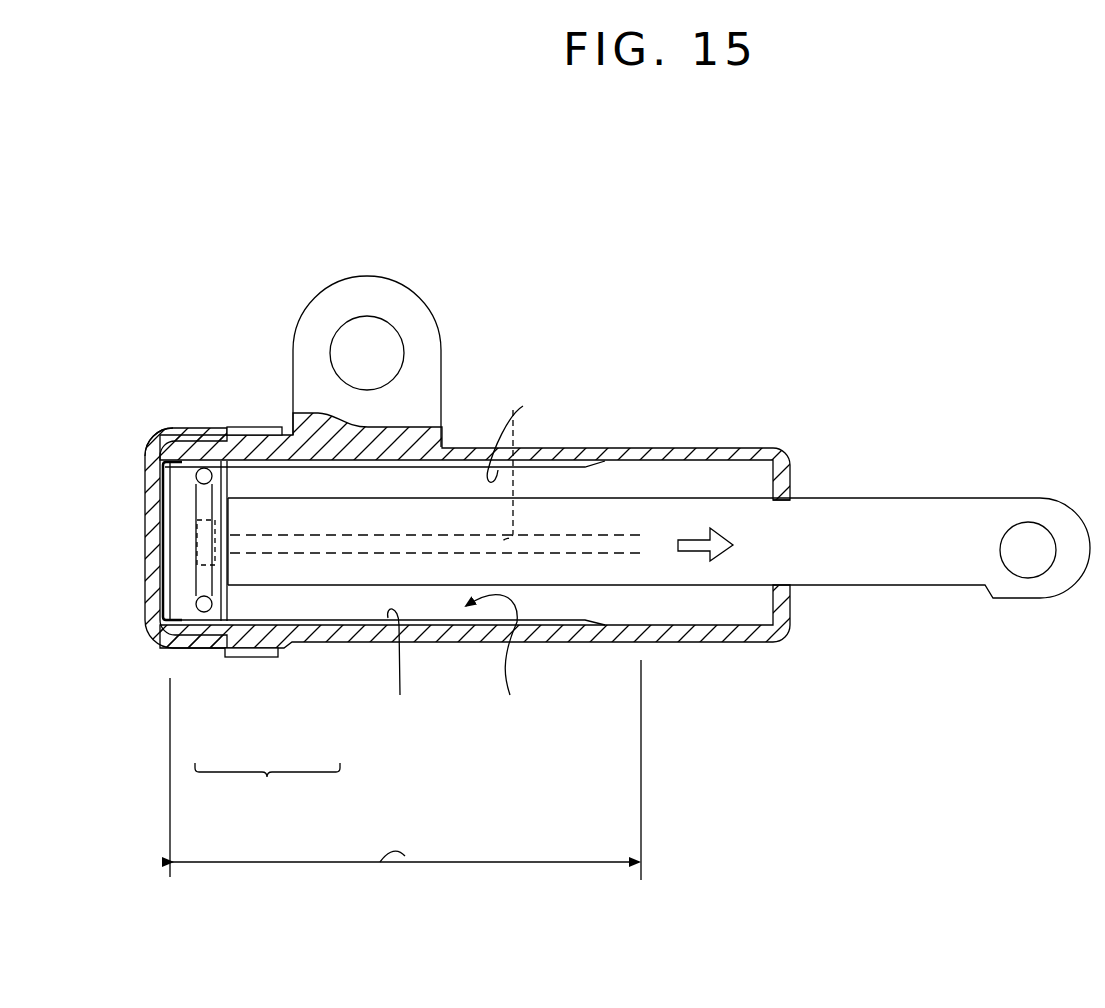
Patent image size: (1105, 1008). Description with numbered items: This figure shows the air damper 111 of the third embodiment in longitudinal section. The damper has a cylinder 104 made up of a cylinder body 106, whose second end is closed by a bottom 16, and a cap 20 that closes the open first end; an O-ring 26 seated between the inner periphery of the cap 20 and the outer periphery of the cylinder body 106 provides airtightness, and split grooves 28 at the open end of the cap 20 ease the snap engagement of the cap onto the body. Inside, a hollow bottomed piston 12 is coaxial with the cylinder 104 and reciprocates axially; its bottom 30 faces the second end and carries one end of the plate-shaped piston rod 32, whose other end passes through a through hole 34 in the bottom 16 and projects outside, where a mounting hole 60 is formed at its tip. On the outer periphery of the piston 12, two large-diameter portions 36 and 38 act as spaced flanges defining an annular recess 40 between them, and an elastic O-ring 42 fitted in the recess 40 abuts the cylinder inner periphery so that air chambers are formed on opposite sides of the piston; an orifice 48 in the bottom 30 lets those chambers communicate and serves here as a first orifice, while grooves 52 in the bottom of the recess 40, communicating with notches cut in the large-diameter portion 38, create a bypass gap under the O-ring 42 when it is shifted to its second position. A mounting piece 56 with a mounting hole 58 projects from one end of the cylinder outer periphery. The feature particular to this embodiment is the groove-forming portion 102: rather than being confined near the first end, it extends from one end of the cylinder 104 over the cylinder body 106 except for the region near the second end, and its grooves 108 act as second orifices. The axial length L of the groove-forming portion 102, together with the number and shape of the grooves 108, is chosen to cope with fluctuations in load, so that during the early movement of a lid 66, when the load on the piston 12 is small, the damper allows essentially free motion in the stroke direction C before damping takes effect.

The piston 12 is at (240, 506).
The bottom 16 is at (793, 467).
The cap 20 is at (137, 622).
The O-ring 26 is at (190, 443).
The split grooves 28 is at (230, 427).
The bottom 30 is at (235, 592).
The piston rod 32 is at (876, 578).
The through hole 34 is at (786, 506).
The large-diameter portion 36 is at (150, 463).
The large-diameter portion 38 is at (258, 462).
The annular recess 40 is at (157, 440).
The O-ring 42 is at (203, 468).
The orifice 48 is at (237, 523).
The grooves 52 is at (197, 520).
The mounting piece 56 is at (432, 320).
The mounting hole 58 is at (365, 323).
The mounting hole 60 is at (1022, 570).
The lid 66 is at (630, 607).
The groove-forming portion 102 is at (512, 662).
The cylinder 104 is at (267, 790).
The cylinder body 106 is at (345, 643).
The grooves 108 is at (475, 555).
The air damper 111 is at (668, 333).
The direction of motion C is at (686, 556).
The axial length L is at (405, 770).